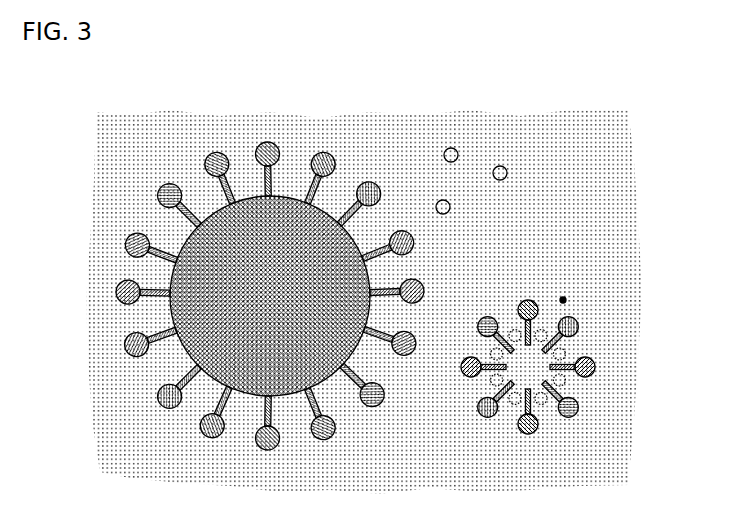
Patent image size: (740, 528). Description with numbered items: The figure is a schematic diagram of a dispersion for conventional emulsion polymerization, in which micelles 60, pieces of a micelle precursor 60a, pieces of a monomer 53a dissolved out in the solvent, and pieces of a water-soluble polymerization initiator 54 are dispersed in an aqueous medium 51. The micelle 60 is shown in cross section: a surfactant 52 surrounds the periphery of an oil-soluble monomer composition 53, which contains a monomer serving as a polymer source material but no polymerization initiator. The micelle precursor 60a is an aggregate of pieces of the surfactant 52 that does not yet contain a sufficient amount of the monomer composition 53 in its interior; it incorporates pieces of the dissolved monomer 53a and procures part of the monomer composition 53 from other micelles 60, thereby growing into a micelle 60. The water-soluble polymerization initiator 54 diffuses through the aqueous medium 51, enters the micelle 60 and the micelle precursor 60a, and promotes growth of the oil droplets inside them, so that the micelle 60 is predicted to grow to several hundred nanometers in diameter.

The aqueous medium 51 is at (140, 132).
The surfactant 52 is at (198, 211).
The monomer composition 53 is at (248, 196).
The monomer dissolved out in solvent 53a is at (452, 148).
The water-soluble polymerization initiator 54 is at (563, 297).
The micelle 60 is at (270, 255).
The micelle precursor 60a is at (627, 273).